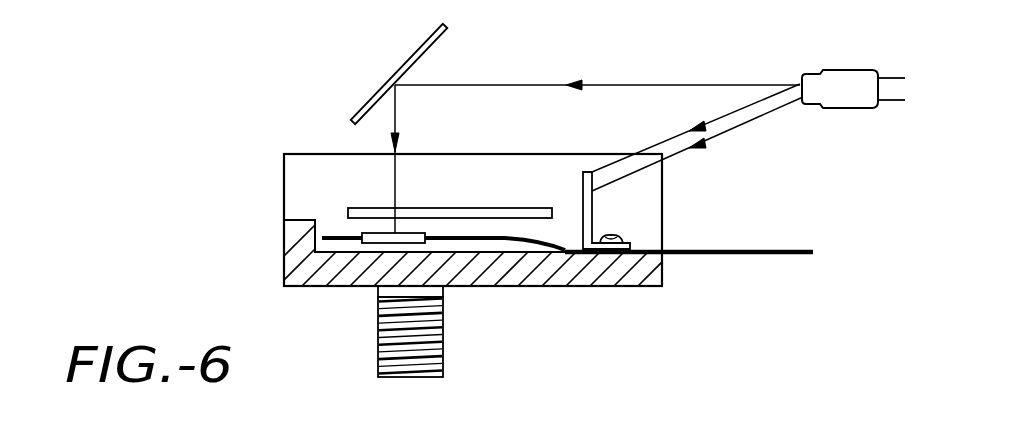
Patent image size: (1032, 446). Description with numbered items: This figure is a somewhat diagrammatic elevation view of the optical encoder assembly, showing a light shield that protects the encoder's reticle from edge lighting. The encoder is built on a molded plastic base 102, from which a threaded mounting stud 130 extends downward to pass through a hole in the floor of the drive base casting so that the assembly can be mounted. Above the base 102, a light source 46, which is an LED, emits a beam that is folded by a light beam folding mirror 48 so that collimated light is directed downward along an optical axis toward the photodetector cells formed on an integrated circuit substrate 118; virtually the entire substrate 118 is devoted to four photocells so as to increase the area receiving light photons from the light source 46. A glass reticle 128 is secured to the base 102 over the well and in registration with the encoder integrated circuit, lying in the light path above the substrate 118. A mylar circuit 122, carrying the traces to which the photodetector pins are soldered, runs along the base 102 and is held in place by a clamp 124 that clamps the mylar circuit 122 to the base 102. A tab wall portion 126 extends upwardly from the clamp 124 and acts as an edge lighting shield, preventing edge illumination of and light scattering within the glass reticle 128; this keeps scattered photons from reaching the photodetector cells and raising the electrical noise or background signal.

The light source 46 is at (852, 77).
The light beam folding mirror 48 is at (436, 43).
The molded plastic base 102 is at (553, 287).
The integrated circuit substrate 118 is at (380, 242).
The mylar circuit 122 is at (768, 250).
The clamp 124 is at (625, 240).
The tab wall portion 126 is at (587, 172).
The glass reticle 128 is at (357, 208).
The threaded mounting stud 130 is at (444, 350).